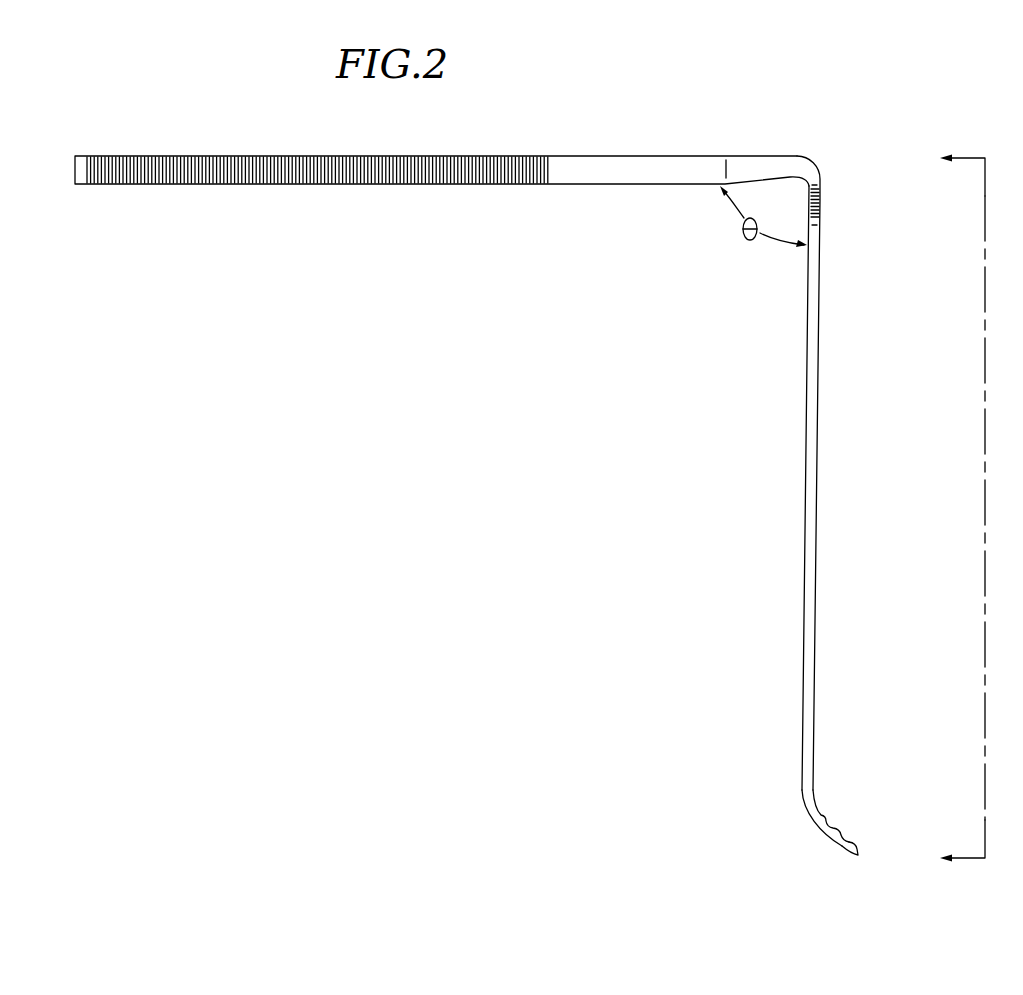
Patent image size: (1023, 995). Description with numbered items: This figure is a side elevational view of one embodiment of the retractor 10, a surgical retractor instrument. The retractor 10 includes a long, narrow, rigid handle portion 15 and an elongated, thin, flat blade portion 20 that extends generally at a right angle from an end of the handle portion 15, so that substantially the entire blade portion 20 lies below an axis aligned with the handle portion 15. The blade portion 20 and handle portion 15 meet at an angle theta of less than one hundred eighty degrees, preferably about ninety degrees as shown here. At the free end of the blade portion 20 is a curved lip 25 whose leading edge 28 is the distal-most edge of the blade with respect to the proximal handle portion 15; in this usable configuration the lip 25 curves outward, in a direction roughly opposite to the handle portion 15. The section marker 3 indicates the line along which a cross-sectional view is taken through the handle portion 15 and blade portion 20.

The retractor 10 is at (632, 139).
The handle portion 15 is at (612, 173).
The blade portion 20 is at (817, 427).
The curved lip 25 is at (832, 825).
The leading edge 28 is at (858, 855).
The section line 3- 3 is at (951, 510).